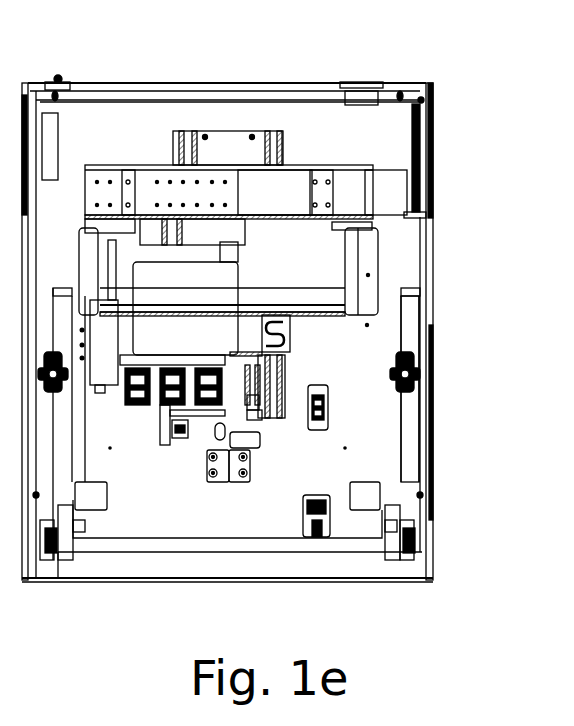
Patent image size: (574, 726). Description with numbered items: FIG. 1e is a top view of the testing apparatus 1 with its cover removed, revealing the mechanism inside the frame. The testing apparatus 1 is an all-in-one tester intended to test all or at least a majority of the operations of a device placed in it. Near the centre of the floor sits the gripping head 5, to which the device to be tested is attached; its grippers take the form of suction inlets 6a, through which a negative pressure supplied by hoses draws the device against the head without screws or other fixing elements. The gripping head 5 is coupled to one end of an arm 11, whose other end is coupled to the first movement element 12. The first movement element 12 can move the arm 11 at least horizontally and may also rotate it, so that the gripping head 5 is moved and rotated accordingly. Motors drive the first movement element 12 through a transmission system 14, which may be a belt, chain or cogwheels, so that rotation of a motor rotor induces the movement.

The testing apparatus 1 is at (398, 52).
The gripping head 5 is at (232, 480).
The suction inlets 6a is at (205, 457).
The arm 11 is at (243, 437).
The first movement element 12 is at (253, 340).
The transmission system 14 is at (380, 437).